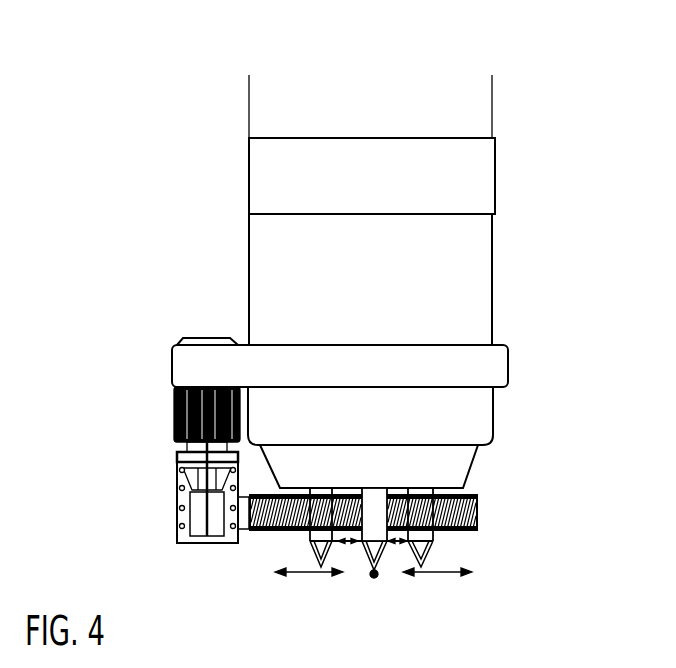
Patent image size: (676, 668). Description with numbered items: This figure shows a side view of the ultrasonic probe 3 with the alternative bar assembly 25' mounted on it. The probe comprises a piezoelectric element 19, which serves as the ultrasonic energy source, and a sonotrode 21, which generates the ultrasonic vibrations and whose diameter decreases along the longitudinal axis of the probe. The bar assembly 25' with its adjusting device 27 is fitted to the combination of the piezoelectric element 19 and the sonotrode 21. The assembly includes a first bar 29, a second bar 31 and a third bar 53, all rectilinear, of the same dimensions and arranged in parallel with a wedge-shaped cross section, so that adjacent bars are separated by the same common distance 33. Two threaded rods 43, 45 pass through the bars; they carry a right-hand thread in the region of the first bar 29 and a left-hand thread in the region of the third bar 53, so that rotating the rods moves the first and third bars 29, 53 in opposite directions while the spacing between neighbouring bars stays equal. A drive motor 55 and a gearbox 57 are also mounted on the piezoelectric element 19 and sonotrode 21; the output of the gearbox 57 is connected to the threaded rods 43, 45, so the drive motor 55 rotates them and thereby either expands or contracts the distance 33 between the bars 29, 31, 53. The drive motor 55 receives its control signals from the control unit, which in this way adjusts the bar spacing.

The ultrasonic probe 3 is at (505, 272).
The piezoelectric element 19 is at (387, 292).
The sonotrode 21 is at (389, 478).
The adjusting device 27 is at (167, 465).
The drive motor 55 is at (176, 407).
The gearbox 57 is at (178, 508).
The threaded rod 43 is at (408, 512).
The threaded rod 45 is at (478, 502).
The alternative bar assembly 25' is at (378, 558).
The first bar 29 is at (310, 541).
The second bar 31 is at (367, 548).
The distance 33 is at (352, 546).
The third bar 53 is at (437, 541).